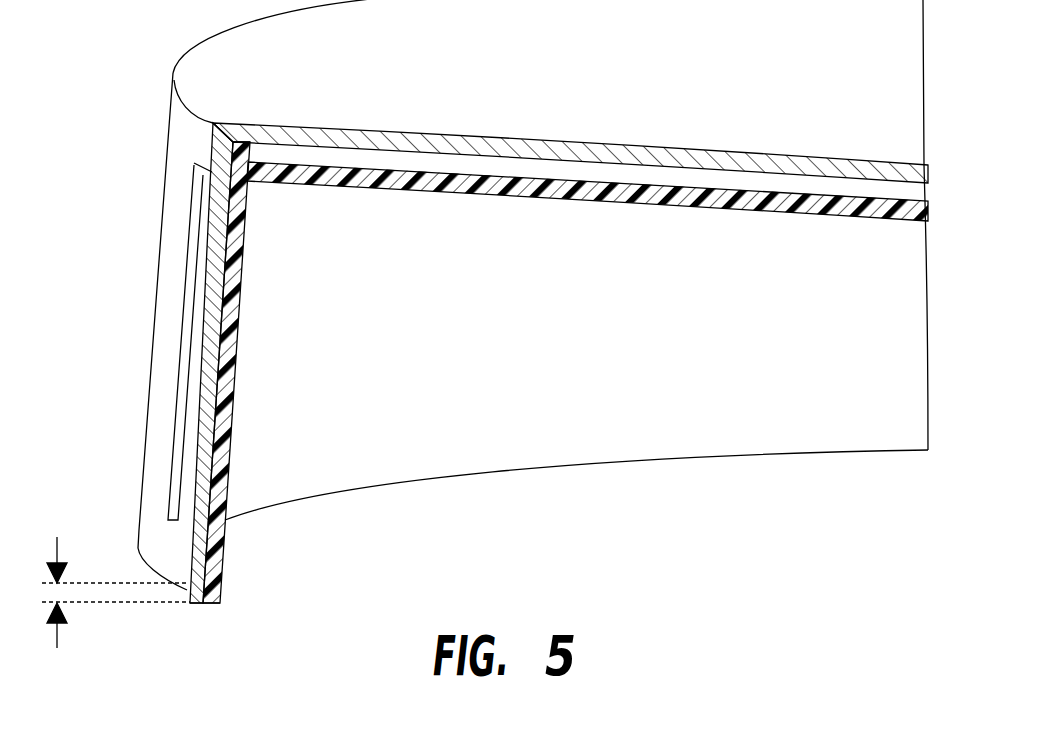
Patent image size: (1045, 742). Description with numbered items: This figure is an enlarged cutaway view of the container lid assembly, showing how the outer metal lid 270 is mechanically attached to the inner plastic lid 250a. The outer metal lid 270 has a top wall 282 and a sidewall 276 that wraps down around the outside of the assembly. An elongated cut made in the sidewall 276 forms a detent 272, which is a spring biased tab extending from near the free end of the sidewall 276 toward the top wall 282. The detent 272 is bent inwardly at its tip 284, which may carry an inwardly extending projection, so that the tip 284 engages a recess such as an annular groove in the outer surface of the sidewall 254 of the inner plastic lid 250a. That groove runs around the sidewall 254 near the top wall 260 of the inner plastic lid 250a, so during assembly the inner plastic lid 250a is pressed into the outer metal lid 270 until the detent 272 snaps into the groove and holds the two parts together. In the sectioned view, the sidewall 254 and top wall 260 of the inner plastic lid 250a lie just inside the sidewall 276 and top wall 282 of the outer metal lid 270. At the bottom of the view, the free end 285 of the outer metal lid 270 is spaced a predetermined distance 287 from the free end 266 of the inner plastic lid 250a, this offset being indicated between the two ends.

The top wall 282 is at (534, 82).
The sidewall 276 is at (183, 148).
The tip 284 is at (210, 198).
The detent 272 is at (200, 280).
The sidewall 254 is at (240, 317).
The outer metal lid 270 is at (140, 403).
The top wall 260 is at (540, 198).
The inner plastic lid 250a is at (305, 495).
The free end 285 is at (187, 603).
The free end 266 is at (207, 603).
The predetermined distance 287 is at (58, 607).